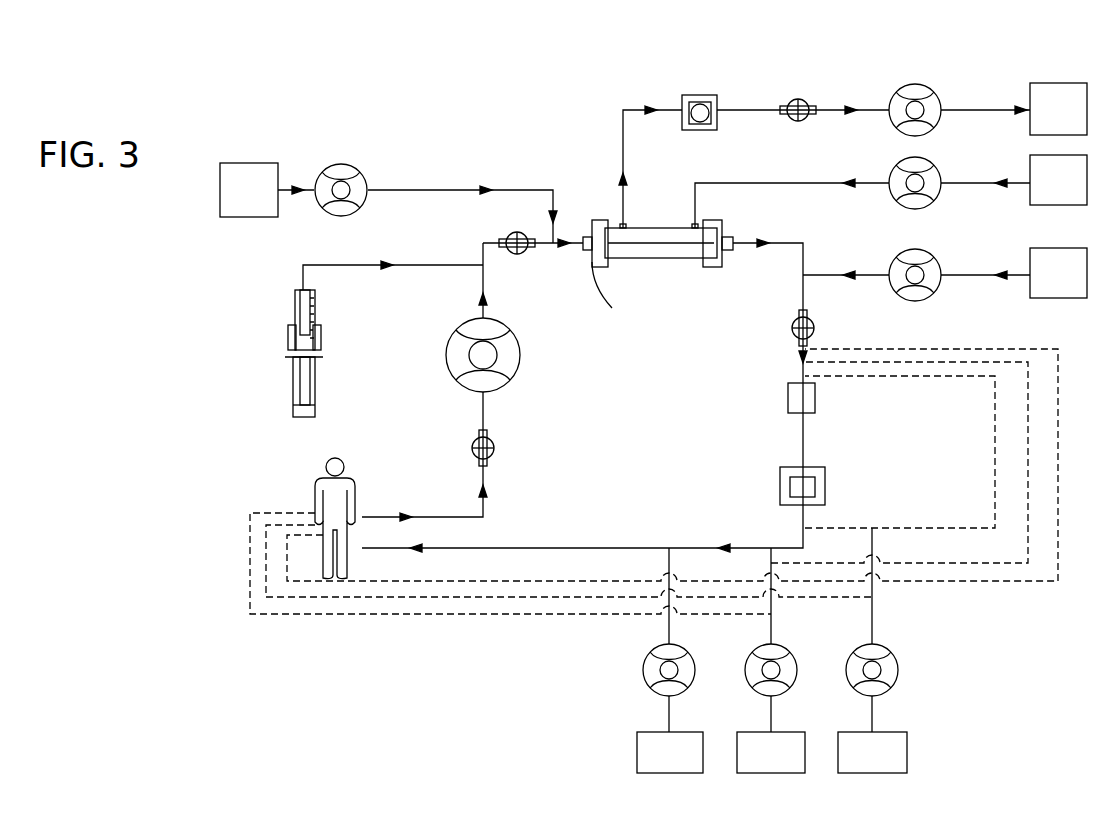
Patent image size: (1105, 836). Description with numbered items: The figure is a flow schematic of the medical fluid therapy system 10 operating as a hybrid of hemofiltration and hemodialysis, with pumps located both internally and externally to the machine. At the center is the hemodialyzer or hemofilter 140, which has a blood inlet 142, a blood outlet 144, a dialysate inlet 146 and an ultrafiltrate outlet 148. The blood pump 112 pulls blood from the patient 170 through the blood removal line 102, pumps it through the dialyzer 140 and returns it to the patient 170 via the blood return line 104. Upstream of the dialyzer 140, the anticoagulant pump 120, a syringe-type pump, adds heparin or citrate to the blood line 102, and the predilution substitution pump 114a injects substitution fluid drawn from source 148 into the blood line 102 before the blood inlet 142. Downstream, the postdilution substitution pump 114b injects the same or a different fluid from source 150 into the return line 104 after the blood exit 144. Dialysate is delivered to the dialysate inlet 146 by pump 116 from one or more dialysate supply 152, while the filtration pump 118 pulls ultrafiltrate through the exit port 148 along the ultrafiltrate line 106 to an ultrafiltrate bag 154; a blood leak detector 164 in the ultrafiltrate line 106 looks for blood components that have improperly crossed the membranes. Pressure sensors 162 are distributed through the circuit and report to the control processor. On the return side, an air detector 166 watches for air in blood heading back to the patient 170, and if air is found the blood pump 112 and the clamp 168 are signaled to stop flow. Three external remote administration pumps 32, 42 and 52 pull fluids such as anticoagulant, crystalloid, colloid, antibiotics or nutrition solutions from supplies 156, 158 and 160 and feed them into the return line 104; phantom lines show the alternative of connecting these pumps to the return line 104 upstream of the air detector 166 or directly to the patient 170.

The system 10 is at (250, 76).
The external pump 32 is at (695, 680).
The external pump 42 is at (797, 680).
The external pump 52 is at (898, 680).
The blood line 102 is at (482, 275).
The blood return line 104 is at (632, 548).
The ultrafiltrate line 106 is at (622, 108).
The blood pump 112 is at (519, 378).
The predilution substitution pump 114a is at (358, 170).
The postdilution substitution pump 114b is at (937, 295).
The dialysate pump 116 is at (893, 161).
The filtration pump 118 is at (895, 87).
The anticoagulant pump 120 is at (292, 372).
The hemodialyzer or hemofilter 140 is at (660, 258).
The blood inlet 142 is at (612, 295).
The blood outlet 144 is at (733, 240).
The dialysate inlet 146 is at (692, 226).
The ultrafiltrate outlet 148 is at (617, 226).
The source 150 is at (1058, 273).
The dialysate supply 152 is at (1058, 180).
The ultrafiltrate bag 154 is at (1058, 109).
The supply 156 is at (670, 752).
The supply 158 is at (771, 752).
The supply 160 is at (872, 752).
The pressure sensor 162 is at (520, 256).
The blood leak detector 164 is at (693, 130).
The air detector 166 is at (817, 397).
The clamp 168 is at (780, 490).
The patient 170 is at (326, 462).